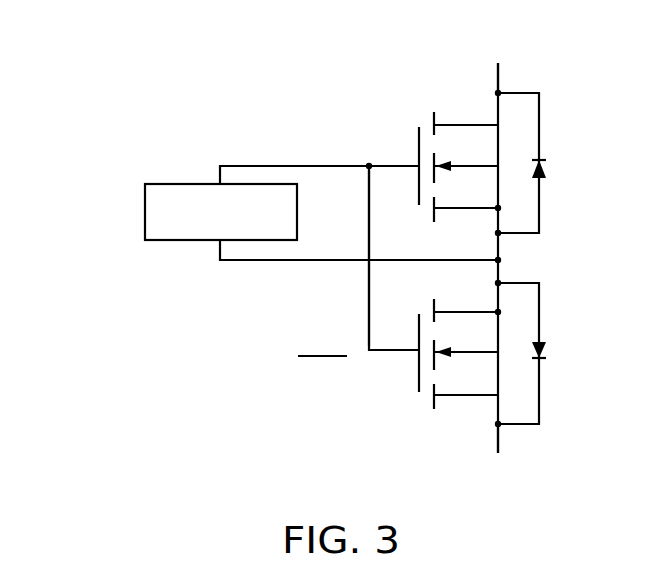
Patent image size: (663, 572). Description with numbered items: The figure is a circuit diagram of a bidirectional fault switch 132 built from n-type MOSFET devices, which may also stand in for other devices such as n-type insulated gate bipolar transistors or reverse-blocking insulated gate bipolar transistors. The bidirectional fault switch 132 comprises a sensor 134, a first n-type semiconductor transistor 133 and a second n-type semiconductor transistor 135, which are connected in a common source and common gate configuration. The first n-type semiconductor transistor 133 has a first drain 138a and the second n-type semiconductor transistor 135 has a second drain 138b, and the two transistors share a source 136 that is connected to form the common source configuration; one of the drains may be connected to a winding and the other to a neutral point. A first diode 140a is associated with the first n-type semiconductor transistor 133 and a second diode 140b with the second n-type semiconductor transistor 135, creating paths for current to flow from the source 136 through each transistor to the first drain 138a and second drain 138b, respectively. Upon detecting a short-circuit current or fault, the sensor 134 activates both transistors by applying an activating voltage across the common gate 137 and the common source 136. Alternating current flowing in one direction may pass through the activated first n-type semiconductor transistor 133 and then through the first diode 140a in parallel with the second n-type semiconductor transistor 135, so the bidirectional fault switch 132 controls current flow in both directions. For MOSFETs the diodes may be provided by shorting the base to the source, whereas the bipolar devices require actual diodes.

The bidirectional fault switch 132 is at (176, 104).
The first n-type semiconductor transistor 133 is at (456, 164).
The sensor 134 is at (145, 206).
The second n-type semiconductor transistor 135 is at (482, 354).
The source 136 is at (498, 260).
The common gate 137 is at (369, 293).
The first drain 138a is at (498, 93).
The second drain 138b is at (498, 424).
The first diode 140a is at (540, 180).
The second diode 140b is at (545, 343).